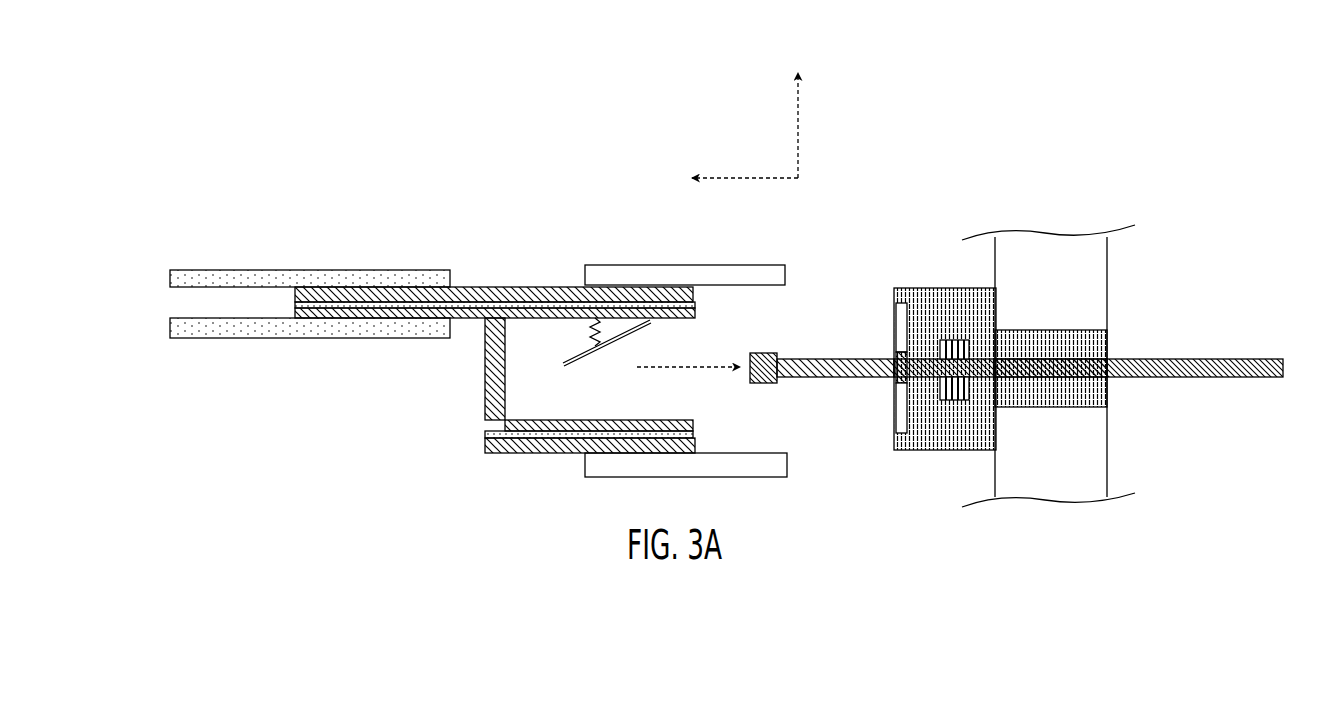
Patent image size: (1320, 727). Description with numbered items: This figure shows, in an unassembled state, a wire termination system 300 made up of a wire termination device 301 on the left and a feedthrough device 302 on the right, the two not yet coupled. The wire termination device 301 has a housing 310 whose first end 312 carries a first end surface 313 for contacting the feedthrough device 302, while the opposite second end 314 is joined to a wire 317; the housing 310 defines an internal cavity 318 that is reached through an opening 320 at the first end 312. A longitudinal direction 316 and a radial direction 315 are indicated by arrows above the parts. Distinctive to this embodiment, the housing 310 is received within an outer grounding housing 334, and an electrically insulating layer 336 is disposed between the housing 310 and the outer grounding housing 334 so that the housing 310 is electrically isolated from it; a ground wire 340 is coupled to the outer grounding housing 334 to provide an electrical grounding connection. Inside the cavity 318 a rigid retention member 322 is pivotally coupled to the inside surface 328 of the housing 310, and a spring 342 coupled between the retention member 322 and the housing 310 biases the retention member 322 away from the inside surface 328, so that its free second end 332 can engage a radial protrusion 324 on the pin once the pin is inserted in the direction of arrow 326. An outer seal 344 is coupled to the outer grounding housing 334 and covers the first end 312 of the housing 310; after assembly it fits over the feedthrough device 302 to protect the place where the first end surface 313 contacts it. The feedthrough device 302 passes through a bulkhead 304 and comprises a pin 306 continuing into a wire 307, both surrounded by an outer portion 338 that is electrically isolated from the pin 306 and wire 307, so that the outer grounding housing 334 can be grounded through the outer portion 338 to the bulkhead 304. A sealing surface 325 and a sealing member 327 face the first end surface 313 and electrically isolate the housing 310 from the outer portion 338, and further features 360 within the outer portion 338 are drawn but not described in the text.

The wire termination system 300 is at (328, 118).
The wire termination device 301 is at (437, 255).
The feedthrough device 302 is at (917, 337).
The bulkhead 304 is at (1061, 282).
The pin 306 is at (804, 358).
The wire 307 is at (1178, 358).
The housing 310 is at (476, 323).
The first end 312 is at (695, 290).
The first end surface 313 is at (697, 425).
The layer end 314 is at (298, 283).
The vertical axis 315 is at (800, 160).
The horizontal axis 316 is at (733, 178).
The lower plate 317 is at (240, 340).
The cavity 318 is at (538, 416).
The inner surface 320 is at (690, 391).
The retention member 322 is at (641, 323).
The pusher block 324 is at (763, 352).
The upper plate portion 325 is at (893, 338).
The direction of motion 326 is at (708, 365).
The sealing member 327 is at (896, 410).
The inside surface 328 is at (558, 323).
The bar direction 332 is at (565, 366).
The outer grounding housing 334 is at (478, 287).
The electrically insulating layer 336 is at (295, 305).
The outer portion 338 is at (930, 288).
The ground wire 340 is at (200, 270).
The spring 342 is at (588, 321).
The outer seal 344 is at (657, 265).
The bearings 360 is at (955, 340).